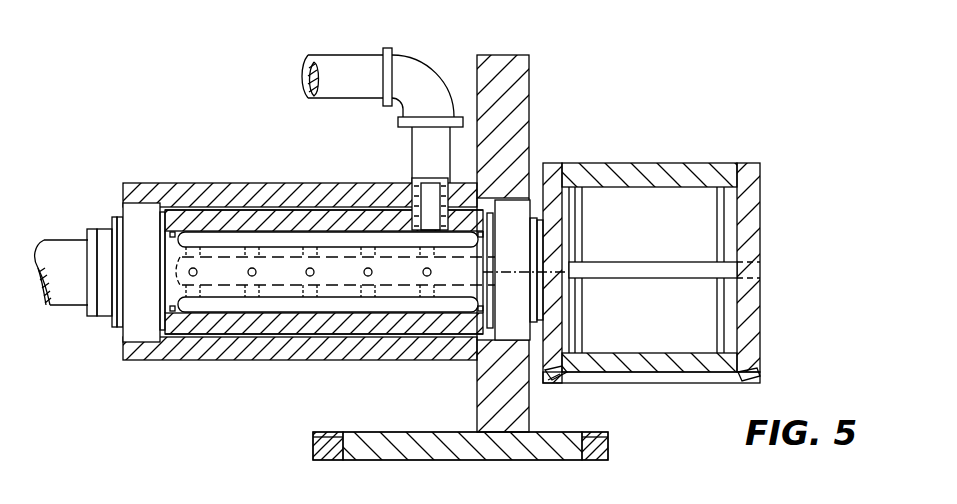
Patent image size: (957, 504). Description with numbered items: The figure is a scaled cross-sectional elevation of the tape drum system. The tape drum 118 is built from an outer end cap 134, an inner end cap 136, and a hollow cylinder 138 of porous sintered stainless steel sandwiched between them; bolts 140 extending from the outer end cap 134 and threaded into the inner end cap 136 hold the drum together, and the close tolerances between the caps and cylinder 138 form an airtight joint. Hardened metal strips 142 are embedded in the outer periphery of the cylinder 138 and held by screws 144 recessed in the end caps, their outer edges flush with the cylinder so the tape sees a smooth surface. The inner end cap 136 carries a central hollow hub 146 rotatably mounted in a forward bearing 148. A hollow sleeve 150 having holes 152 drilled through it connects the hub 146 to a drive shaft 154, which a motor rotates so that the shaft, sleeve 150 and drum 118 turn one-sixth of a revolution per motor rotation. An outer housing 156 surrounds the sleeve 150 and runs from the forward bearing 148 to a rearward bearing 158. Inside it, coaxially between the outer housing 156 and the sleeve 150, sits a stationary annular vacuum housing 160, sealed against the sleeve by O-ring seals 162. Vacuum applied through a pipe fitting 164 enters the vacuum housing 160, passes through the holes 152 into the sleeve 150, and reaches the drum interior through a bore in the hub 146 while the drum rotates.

The tape drum 118 is at (691, 280).
The outer end cap 134 is at (760, 247).
The inner end cap 136 is at (543, 163).
The hollow cylinder 138 is at (648, 190).
The bolts 140 is at (625, 264).
The hardened metal strips 142 is at (673, 385).
The screws 144 is at (543, 383).
The hub 146 is at (508, 308).
The forward bearing 148 is at (536, 213).
The hollow sleeve 150 is at (237, 300).
The holes 152 is at (306, 292).
The drive shaft 154 is at (68, 302).
The outer housing 156 is at (211, 182).
The rearward bearing 158 is at (123, 208).
The vacuum housing 160 is at (283, 210).
The O-ring seals 162 is at (173, 231).
The pipe fitting 164 is at (397, 47).